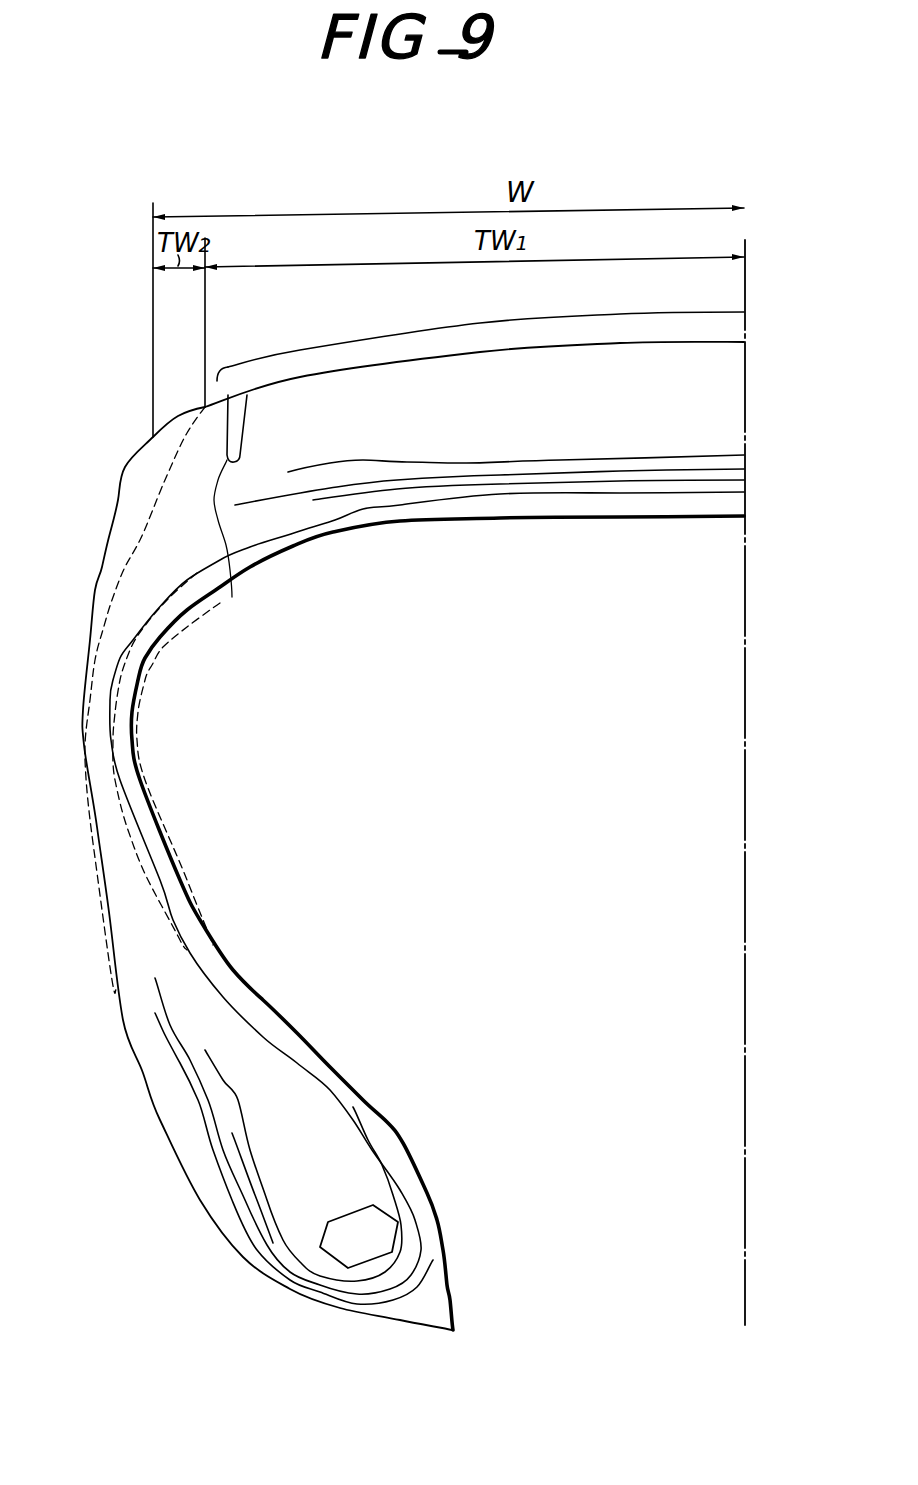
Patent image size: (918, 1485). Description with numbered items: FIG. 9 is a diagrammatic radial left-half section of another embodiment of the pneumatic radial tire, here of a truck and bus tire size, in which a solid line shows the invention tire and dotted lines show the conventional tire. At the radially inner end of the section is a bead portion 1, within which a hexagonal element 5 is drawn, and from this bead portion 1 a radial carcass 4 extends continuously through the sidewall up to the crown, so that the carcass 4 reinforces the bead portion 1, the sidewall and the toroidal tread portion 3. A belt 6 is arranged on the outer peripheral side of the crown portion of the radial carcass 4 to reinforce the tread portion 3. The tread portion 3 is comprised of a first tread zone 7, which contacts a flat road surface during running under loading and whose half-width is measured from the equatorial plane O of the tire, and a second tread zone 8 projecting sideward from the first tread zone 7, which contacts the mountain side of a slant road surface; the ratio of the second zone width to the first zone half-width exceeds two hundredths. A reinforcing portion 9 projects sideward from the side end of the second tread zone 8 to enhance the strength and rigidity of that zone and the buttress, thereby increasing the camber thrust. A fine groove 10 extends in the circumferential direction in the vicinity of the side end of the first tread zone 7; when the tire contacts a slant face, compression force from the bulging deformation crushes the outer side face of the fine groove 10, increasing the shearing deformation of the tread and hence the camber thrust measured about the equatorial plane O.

The bead portion 1 is at (191, 1198).
The toroidal tread portion 3 is at (618, 336).
The radial carcass 4 is at (229, 980).
The bead core 5 is at (380, 1230).
The belt 6 is at (694, 448).
The first tread zone 7 is at (347, 338).
The second tread zone 8 is at (178, 386).
The reinforcing portion 9 is at (137, 472).
The fine groove 10 is at (231, 515).
The equatorial plane O is at (746, 975).